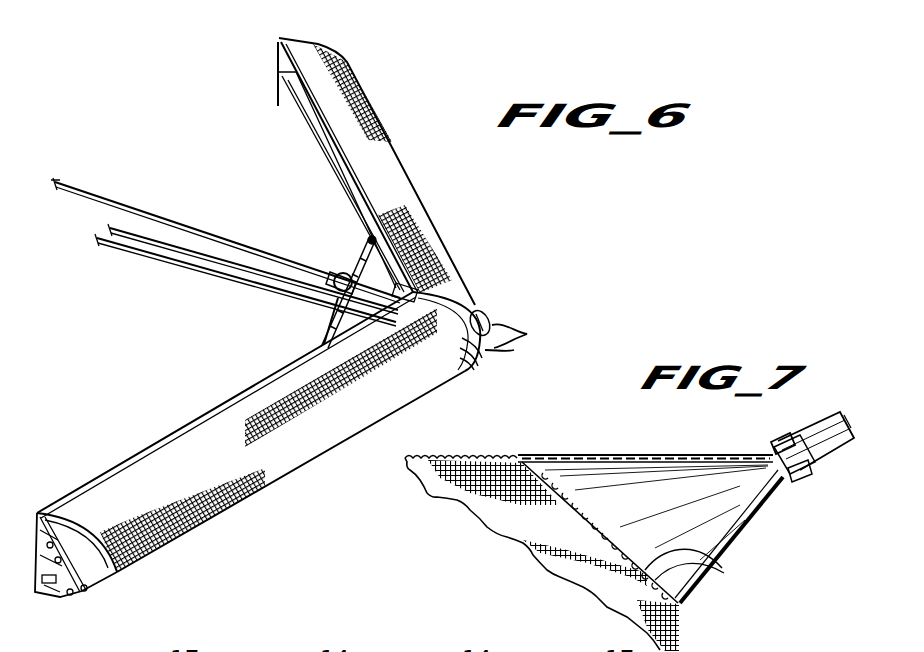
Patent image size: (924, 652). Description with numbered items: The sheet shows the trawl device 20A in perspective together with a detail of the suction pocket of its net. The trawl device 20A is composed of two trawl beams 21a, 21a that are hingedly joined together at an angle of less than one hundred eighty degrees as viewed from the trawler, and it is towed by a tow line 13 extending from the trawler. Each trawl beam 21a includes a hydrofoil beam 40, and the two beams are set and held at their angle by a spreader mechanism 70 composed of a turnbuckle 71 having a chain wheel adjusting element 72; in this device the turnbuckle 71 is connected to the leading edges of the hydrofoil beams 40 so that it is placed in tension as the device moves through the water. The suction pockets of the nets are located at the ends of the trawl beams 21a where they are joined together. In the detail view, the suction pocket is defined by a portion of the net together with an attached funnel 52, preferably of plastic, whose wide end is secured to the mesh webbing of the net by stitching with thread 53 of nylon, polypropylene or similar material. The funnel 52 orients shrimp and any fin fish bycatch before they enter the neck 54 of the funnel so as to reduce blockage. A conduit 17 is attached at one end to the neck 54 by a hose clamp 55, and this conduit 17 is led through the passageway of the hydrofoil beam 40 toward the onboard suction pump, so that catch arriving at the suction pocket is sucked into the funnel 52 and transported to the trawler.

In FIG. 6, the tow line 13 is at (72, 190).
In FIG. 6, the conduit 17 is at (172, 257).
In FIG. 7, the conduit 17 is at (828, 456).
In FIG. 6, the trawl device 20A is at (212, 201).
In FIG. 6, the trawl beam 21a is at (407, 181).
In FIG. 6, the hydrofoil beam 40 is at (302, 146).
In FIG. 6, the funnel 52 is at (490, 314).
In FIG. 7, the funnel 52 is at (636, 455).
In FIG. 7, the thread 53 is at (700, 562).
In FIG. 7, the neck of the funnel 54 is at (786, 481).
In FIG. 7, the hose clamp 55 is at (780, 440).
In FIG. 6, the spreader mechanism 70 is at (337, 248).
In FIG. 6, the turnbuckle 71 is at (330, 336).
In FIG. 6, the chain wheel adjusting element 72 is at (336, 271).